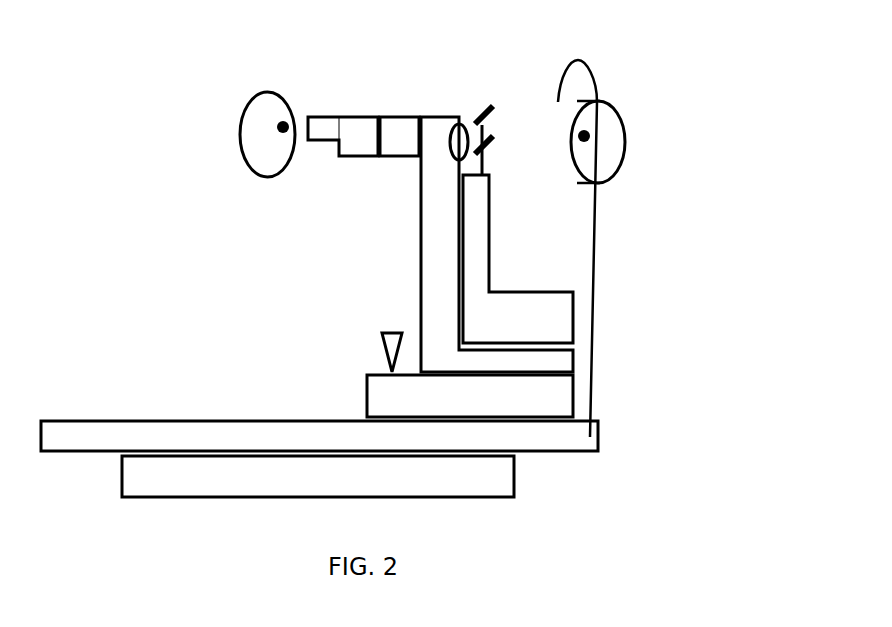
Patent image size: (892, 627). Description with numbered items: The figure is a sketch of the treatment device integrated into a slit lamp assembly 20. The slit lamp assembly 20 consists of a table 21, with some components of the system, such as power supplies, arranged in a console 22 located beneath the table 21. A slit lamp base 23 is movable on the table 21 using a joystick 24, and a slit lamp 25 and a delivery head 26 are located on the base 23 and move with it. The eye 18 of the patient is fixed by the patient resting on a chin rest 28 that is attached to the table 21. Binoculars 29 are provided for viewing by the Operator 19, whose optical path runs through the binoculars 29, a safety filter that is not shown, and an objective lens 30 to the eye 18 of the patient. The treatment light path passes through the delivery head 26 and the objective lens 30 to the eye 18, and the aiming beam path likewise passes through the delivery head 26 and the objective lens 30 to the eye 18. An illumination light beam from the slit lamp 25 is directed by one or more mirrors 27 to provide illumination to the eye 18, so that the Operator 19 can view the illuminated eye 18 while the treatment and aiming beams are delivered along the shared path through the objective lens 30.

The eye 18 is at (617, 113).
The Operator 19 is at (240, 143).
The slit lamp assembly 20 is at (228, 291).
The table 21 is at (453, 448).
The console 22 is at (368, 488).
The slit lamp base 23 is at (500, 414).
The joystick 24 is at (382, 353).
The slit lamp 25 is at (517, 332).
The delivery head 26 is at (421, 266).
The mirrors 27 is at (492, 108).
The chin rest 28 is at (578, 184).
The binoculars 29 is at (326, 116).
The objective lens 30 is at (470, 122).